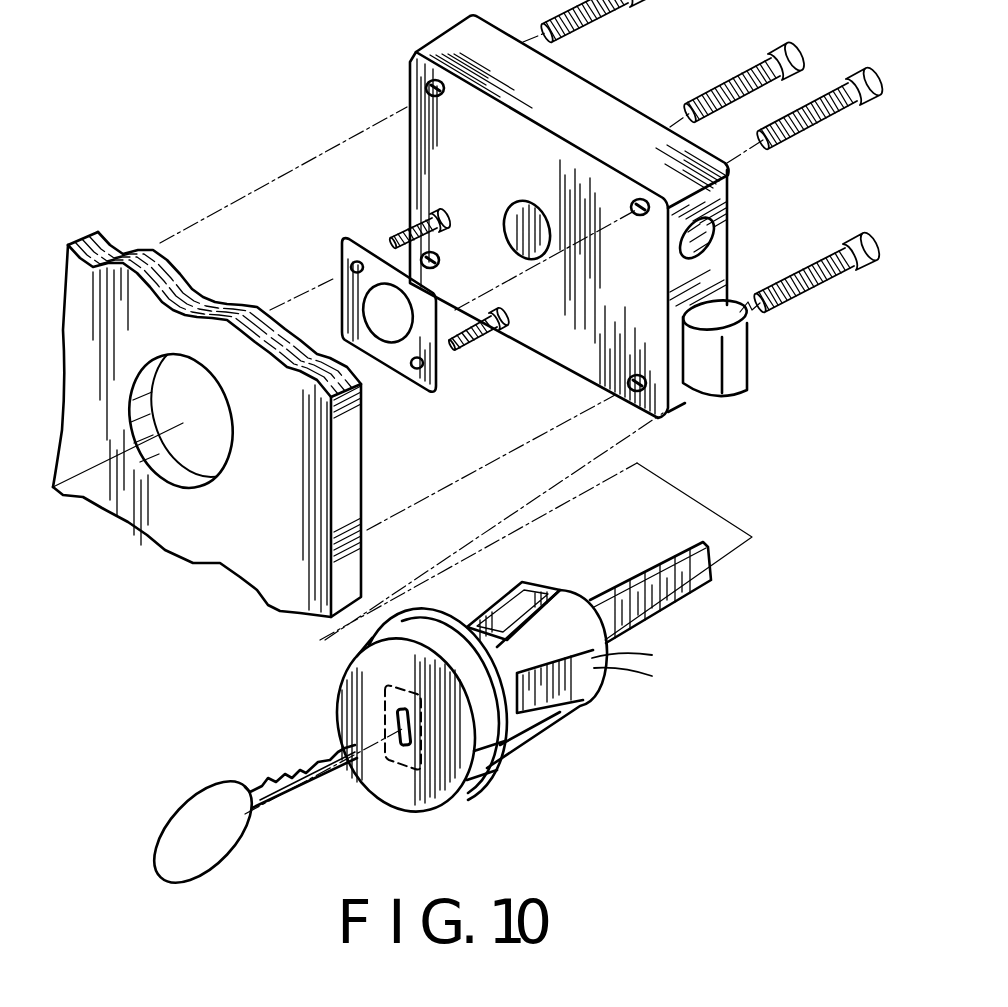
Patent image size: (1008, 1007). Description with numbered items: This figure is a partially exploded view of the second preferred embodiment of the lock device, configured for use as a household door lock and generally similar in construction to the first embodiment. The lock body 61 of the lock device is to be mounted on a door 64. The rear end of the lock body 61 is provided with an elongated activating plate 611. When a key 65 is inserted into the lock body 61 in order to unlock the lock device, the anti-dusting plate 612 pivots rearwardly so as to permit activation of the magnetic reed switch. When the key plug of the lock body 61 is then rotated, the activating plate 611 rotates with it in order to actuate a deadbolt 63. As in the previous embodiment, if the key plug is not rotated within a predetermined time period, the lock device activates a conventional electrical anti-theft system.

The lock body 61 is at (585, 697).
The activating plate 611 is at (660, 600).
The anti-dusting plate 612 is at (383, 716).
The deadbolt 63 is at (412, 188).
The door 64 is at (145, 500).
The key 65 is at (250, 810).